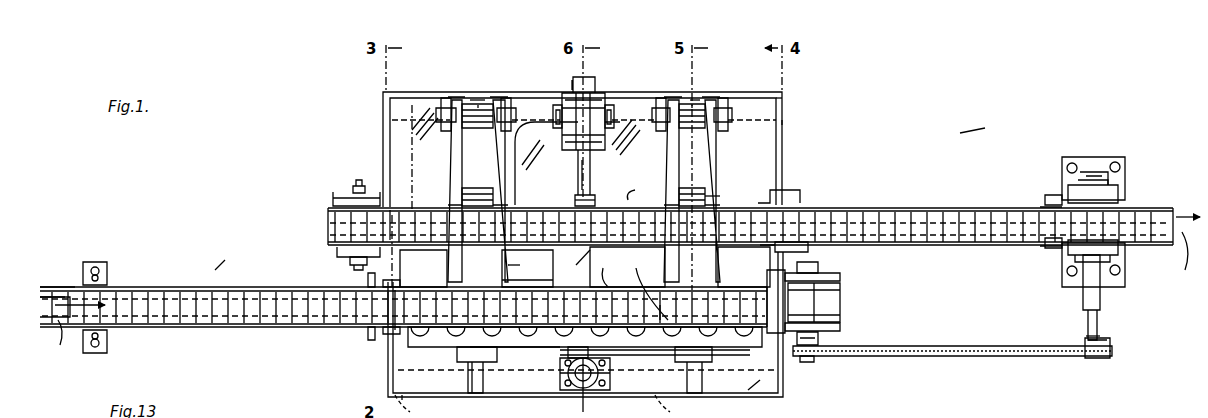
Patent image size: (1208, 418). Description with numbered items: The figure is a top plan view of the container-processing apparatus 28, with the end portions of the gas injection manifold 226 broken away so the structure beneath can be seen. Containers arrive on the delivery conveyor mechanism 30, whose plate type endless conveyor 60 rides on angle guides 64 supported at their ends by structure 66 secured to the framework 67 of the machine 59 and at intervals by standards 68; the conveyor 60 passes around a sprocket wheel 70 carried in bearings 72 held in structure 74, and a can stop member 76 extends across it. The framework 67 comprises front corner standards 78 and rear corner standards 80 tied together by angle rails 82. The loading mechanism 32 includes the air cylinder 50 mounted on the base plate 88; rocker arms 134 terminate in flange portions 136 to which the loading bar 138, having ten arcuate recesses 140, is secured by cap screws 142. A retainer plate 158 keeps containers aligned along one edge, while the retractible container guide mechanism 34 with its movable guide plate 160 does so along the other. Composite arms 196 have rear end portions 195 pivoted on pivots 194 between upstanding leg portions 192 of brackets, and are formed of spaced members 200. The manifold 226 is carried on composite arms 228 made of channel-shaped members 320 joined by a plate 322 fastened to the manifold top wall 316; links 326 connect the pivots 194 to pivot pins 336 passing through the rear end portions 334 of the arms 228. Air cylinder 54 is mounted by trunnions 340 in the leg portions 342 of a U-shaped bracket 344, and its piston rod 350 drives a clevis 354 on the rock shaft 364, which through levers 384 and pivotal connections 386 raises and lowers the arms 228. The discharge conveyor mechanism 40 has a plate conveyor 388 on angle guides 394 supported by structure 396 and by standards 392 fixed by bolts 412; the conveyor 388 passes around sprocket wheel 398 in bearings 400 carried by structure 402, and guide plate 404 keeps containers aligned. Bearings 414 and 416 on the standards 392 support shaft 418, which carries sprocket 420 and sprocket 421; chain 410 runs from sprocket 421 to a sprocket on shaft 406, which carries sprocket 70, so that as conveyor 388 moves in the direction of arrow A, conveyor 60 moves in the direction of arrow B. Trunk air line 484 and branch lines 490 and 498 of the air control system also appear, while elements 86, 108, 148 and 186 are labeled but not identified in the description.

The apparatus 28 is at (982, 128).
The delivery conveyor mechanism 30 is at (218, 268).
The container transfer or loading mechanism 32 is at (400, 380).
The retractible container guide mechanism 34 is at (660, 322).
The discharge conveyor mechanism 40 is at (960, 195).
The air pressure operated cylinder 50 is at (604, 404).
The air pressure operated cylinder 54 is at (578, 78).
The machine 59 is at (383, 98).
The plate type endless conveyor 60 is at (165, 287).
The angle guides 64 is at (60, 287).
The supporting structure 66 is at (366, 275).
The framework 67 is at (784, 120).
The standards 68 is at (107, 272).
The sprocket wheel 70 is at (842, 300).
The bearings 72 is at (820, 266).
The supporting structure 74 is at (842, 276).
The abutment or can stop member 76 is at (770, 330).
The front corner standards 78 is at (393, 366).
The rear corner standards 80 is at (452, 100).
The angle rails 82 is at (392, 122).
The lower member 86 is at (406, 406).
The base plate 88 is at (659, 406).
The motor 108 is at (560, 376).
The rocker arms 134 is at (478, 393).
The flange portion 136 is at (472, 347).
The loading bar 138 is at (763, 399).
The recesses 140 is at (644, 286).
The cap screws 142 is at (468, 370).
The frame member 148 is at (785, 124).
The guide or retainer plate 158 is at (395, 322).
The guide plate 160 is at (608, 268).
The bearing 186 is at (446, 98).
The upstanding leg portions 192 is at (672, 102).
The pivots 194 is at (452, 102).
The rear end portions 195 is at (740, 69).
The composite arms 196 is at (775, 192).
The spaced members 200 is at (447, 260).
The manifold 226 is at (385, 287).
The composite arms 228 is at (446, 158).
The top wall 316 is at (515, 337).
The channel-shaped members 320 is at (727, 270).
The plate 322 is at (527, 275).
The links 326 is at (478, 104).
The rear end portions 334 is at (478, 100).
The pivot pin 336 is at (700, 104).
The trunnions 340 is at (553, 118).
The upstanding leg portions 342 is at (557, 105).
The U-shaped bracket 344 is at (535, 140).
The piston rod 350 is at (625, 141).
The clevis 354 is at (575, 200).
The rock shaft 364 is at (646, 185).
The levers 384 is at (462, 194).
The pivotal connection 386 is at (712, 196).
The plate type endless conveyor 388 is at (462, 201).
The standards 392 is at (1118, 195).
The angle guides 394 is at (990, 208).
The supporting structure 396 is at (795, 200).
The sprocket wheel 398 is at (392, 226).
The bearings 400 is at (353, 189).
The supporting structure 402 is at (330, 200).
The guide plate 404 is at (569, 261).
The shaft 406 is at (815, 360).
The endless chain 410 is at (968, 358).
The bolts 412 is at (1112, 163).
The bearing 414 is at (1108, 178).
The bearing 416 is at (1100, 300).
The shaft 418 is at (1105, 338).
The sprocket 420 is at (1062, 248).
The sprocket 421 is at (1085, 338).
The trunk air line 484 is at (532, 155).
The branch line 490 is at (563, 350).
The branch line 498 is at (580, 165).
The arrow A is at (1181, 257).
The arrow B is at (79, 336).